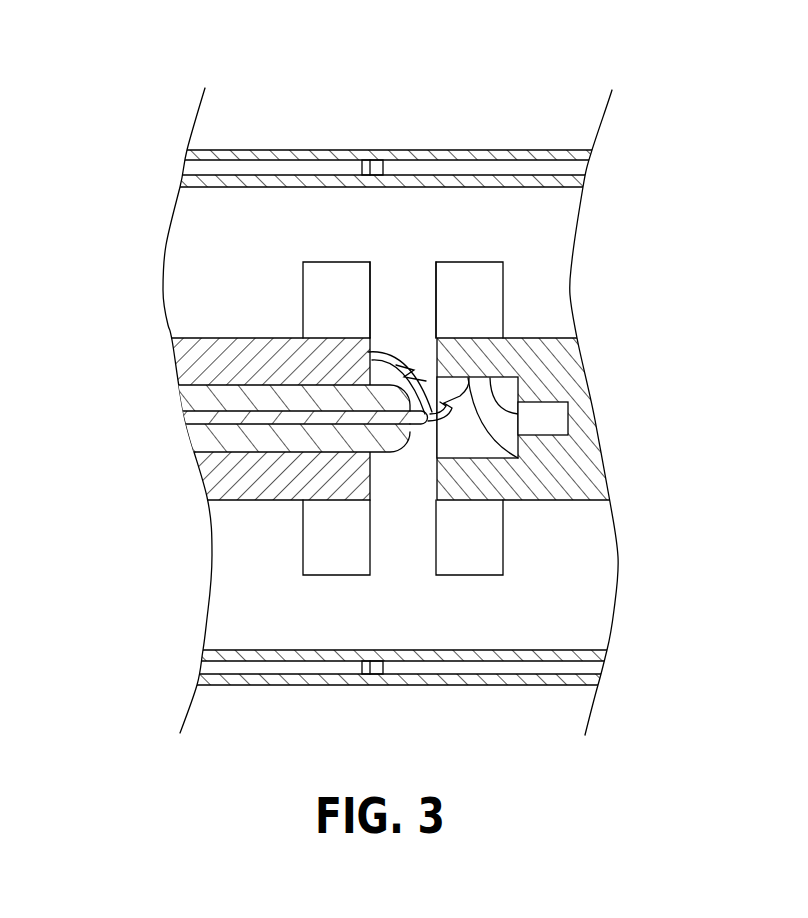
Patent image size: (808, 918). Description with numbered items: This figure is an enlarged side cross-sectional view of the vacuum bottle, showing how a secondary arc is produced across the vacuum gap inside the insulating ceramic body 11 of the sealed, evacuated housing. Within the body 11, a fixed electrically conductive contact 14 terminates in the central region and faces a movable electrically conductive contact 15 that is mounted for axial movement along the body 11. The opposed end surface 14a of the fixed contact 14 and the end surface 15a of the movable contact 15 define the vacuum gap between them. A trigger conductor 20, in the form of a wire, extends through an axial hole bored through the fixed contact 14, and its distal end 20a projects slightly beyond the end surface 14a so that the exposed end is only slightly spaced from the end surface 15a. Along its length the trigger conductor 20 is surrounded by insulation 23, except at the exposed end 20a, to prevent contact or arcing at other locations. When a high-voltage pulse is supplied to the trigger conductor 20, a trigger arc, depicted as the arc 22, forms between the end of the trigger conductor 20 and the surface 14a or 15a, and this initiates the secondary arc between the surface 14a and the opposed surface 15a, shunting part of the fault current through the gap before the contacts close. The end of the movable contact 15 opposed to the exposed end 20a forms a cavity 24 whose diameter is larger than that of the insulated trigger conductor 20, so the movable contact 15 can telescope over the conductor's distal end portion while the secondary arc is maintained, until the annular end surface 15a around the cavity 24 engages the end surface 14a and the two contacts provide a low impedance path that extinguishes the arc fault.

The body 11 is at (517, 687).
The fixed contact 14 is at (335, 262).
The end surface of fixed contact 14a is at (371, 272).
The movable contact 15 is at (470, 262).
The end surface of movable contact 15a is at (435, 272).
The trigger conductor 20 is at (195, 418).
The distal end of trigger conductor 20a is at (416, 430).
The arc 22 is at (520, 455).
The insulation 23 is at (200, 398).
The cavity 24 is at (520, 414).